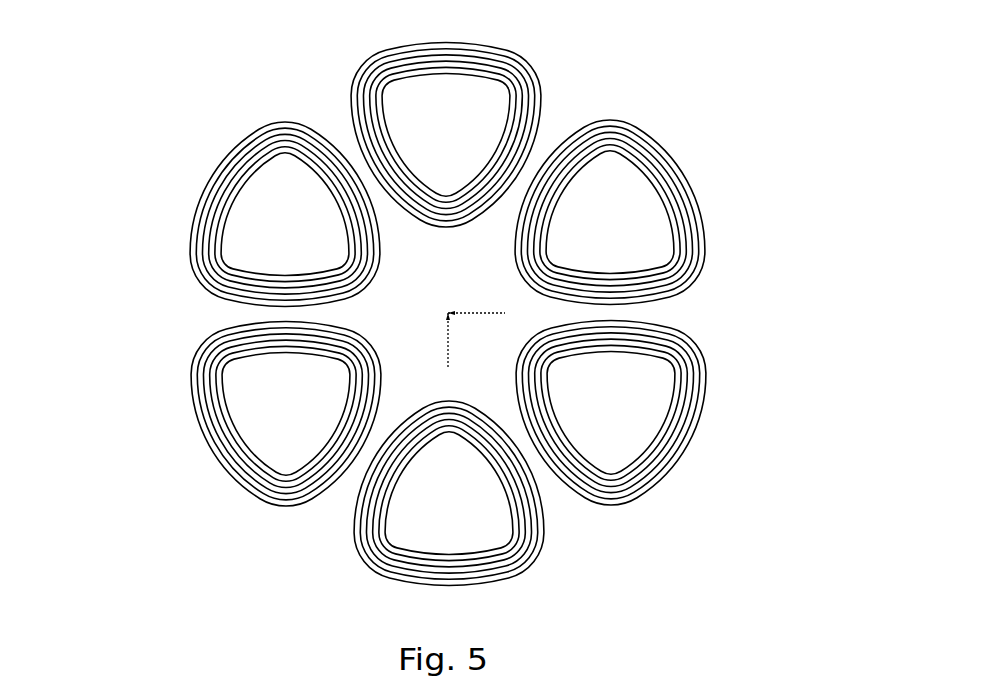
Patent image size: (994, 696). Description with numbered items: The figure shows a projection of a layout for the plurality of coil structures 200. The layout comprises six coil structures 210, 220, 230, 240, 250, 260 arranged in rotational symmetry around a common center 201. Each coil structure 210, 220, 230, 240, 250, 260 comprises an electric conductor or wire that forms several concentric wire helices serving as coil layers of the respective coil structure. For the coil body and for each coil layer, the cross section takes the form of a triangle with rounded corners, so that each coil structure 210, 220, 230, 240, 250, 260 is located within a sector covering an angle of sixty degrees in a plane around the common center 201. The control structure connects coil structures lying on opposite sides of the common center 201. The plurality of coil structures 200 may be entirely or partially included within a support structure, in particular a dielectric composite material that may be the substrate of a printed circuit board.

The plurality of coil structures 200 is at (192, 55).
The common center 201 is at (448, 313).
The coil structure 210 is at (542, 66).
The coil structure 220 is at (692, 158).
The coil structure 230 is at (693, 457).
The coil structure 240 is at (470, 598).
The coil structure 250 is at (192, 449).
The coil structure 260 is at (205, 165).